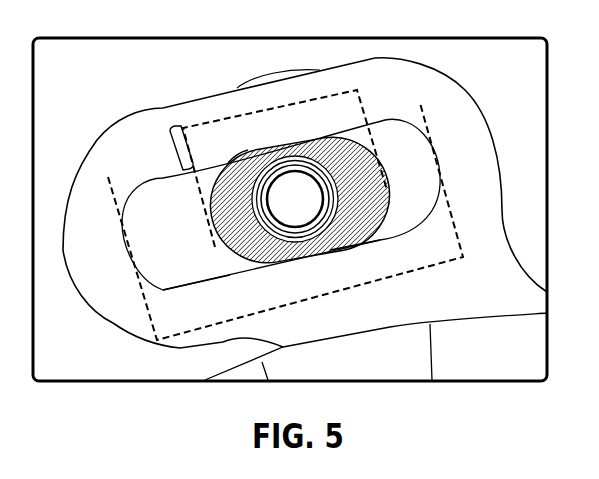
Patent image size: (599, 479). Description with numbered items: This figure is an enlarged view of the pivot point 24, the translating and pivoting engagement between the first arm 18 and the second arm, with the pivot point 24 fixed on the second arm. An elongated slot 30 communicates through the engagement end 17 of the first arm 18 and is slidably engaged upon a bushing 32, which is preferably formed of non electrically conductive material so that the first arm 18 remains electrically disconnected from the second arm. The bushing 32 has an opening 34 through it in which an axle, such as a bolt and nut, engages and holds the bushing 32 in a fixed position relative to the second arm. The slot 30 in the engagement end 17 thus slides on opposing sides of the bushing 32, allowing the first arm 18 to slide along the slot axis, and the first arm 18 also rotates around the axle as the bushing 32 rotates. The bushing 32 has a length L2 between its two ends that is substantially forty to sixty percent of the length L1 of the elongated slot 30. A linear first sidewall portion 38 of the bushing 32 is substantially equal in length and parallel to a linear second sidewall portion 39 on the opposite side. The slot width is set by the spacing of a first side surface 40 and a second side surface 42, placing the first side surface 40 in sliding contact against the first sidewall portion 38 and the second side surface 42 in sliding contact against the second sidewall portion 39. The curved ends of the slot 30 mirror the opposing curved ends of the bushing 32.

The engagement end 17 is at (480, 137).
The first arm 18 is at (130, 318).
The pivot point 24 is at (118, 102).
The slot 30 is at (157, 207).
The bushing 32 is at (325, 145).
The opening 34 is at (288, 215).
The first sidewall portion 38 is at (245, 153).
The second sidewall portion 39 is at (343, 243).
The first side surface 40 is at (180, 129).
The second side surface 42 is at (218, 281).
The length of the elongated slot L1 is at (285, 221).
The length of the bushing L2 is at (285, 168).